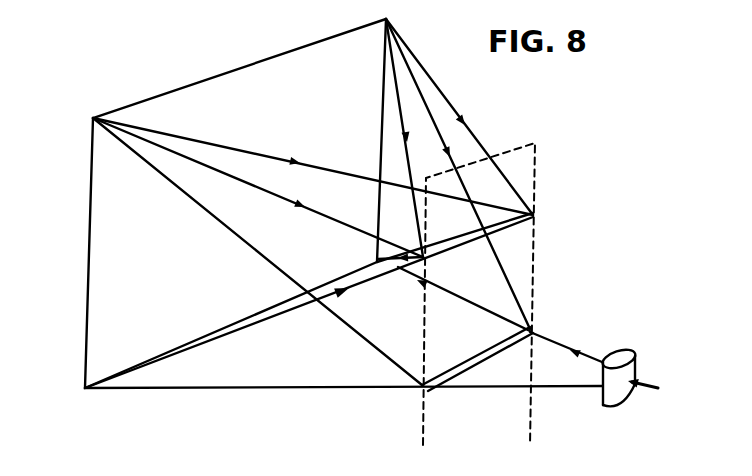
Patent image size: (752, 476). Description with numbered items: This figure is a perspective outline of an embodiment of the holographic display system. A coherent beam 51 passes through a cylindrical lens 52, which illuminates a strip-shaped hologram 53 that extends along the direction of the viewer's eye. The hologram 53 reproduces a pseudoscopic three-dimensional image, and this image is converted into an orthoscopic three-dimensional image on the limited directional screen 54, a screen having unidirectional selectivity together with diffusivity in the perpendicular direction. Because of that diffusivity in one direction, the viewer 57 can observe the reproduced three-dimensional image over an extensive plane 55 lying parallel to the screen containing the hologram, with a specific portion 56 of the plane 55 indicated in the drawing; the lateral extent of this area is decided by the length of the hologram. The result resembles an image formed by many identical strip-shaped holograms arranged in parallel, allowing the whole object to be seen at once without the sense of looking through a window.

The coherent beam 51 is at (653, 390).
The cylindrical lens 52 is at (636, 355).
The strip-shaped hologram 53 is at (533, 331).
The limited directional screen 54 is at (314, 203).
The plane on which the reproduced image is observed 55 is at (536, 144).
The specific portion of the plane 56 is at (533, 215).
The viewer 57 is at (477, 244).